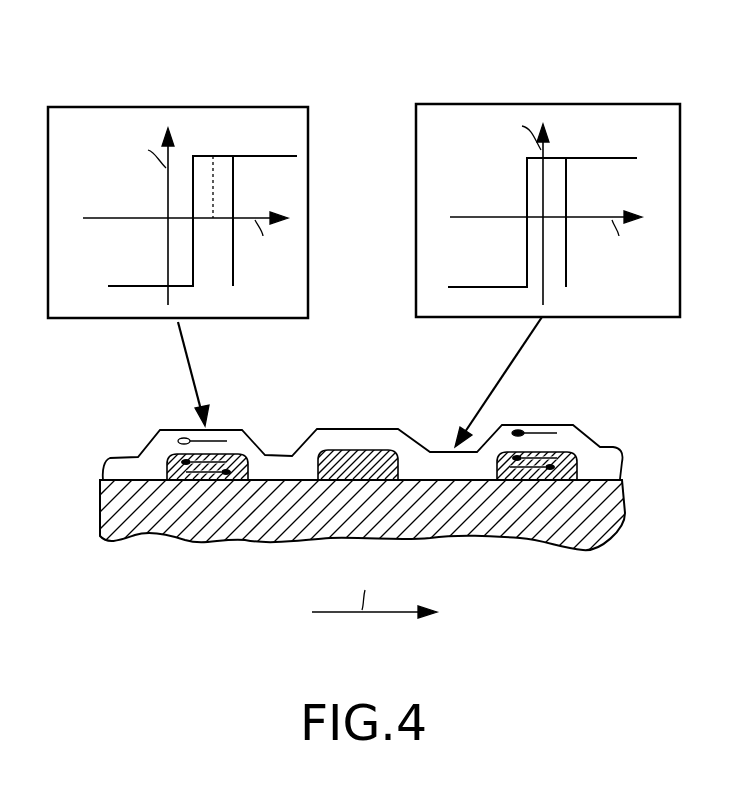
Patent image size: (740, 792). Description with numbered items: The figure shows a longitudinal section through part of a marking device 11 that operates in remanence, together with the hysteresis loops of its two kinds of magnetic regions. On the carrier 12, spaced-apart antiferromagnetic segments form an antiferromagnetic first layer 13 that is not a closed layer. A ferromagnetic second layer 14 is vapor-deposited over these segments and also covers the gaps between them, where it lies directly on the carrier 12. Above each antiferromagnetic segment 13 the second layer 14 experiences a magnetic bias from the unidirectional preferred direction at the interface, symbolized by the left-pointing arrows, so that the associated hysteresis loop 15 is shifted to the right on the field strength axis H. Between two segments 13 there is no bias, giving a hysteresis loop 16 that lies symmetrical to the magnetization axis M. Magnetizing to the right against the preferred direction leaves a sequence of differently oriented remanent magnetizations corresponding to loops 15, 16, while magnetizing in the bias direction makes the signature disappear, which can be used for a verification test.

The marking device 11 is at (569, 401).
The carrier 12 is at (198, 540).
The antiferromagnetic first layer 13 is at (247, 455).
The ferromagnetic second layer 14 is at (123, 464).
The hysteresis loop 15 is at (223, 156).
The hysteresis loop 16 is at (555, 158).